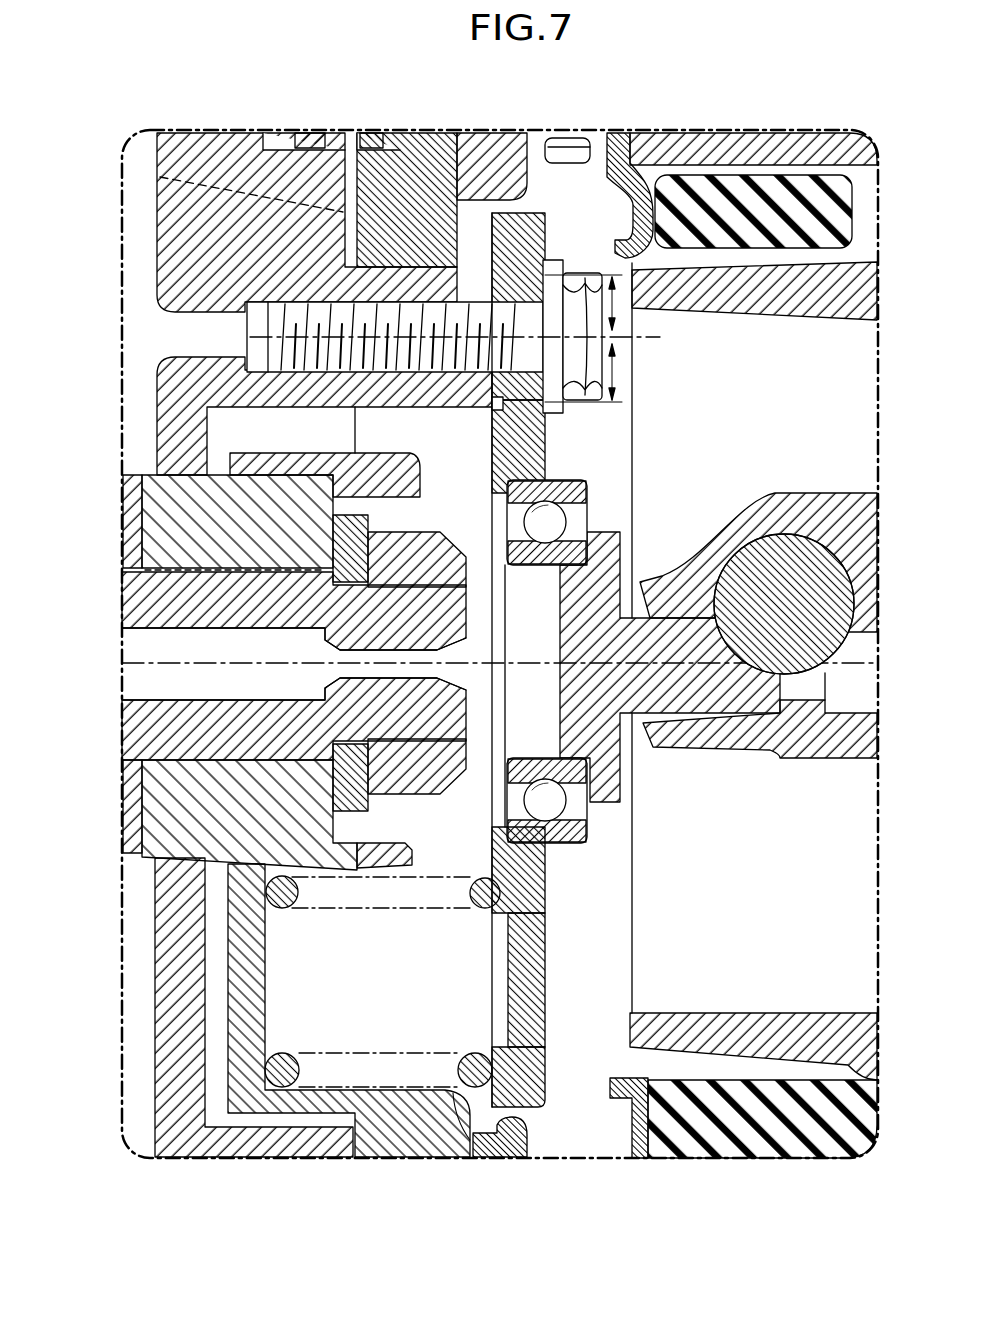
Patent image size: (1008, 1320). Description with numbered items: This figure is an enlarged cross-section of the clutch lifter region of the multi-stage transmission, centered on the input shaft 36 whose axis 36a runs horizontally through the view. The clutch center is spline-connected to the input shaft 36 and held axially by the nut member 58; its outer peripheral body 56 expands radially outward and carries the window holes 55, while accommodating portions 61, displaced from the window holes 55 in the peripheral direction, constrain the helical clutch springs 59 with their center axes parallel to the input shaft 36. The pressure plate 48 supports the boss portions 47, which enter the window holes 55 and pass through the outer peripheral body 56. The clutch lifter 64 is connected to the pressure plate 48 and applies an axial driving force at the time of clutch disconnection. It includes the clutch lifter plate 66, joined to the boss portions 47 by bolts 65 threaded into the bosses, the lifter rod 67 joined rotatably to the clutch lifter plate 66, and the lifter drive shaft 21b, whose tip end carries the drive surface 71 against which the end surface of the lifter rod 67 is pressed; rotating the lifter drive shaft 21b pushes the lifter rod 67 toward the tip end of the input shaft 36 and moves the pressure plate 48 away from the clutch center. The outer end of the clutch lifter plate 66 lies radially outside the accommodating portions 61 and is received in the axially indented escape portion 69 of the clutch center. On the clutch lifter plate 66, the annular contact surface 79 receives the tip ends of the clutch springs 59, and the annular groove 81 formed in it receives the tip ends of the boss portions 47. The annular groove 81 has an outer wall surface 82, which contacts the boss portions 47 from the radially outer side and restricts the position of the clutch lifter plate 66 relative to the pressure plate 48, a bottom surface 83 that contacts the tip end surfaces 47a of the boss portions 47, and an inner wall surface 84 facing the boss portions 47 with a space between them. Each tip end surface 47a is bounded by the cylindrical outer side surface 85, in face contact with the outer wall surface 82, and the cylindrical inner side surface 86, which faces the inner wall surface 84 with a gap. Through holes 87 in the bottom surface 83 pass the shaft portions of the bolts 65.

The lifter drive shaft 21b is at (774, 590).
The input shaft 36 is at (148, 728).
The axis of the input shaft 36a is at (148, 662).
The boss portion 47 is at (466, 400).
The tip end surface 47a is at (548, 400).
The pressure plate 48 is at (152, 433).
The window hole 55 is at (408, 462).
The outer peripheral body 56 is at (370, 236).
The nut member 58 is at (413, 790).
The clutch spring 59 is at (278, 1066).
The accommodating portion 61 is at (335, 1087).
The clutch lifter 64 is at (606, 828).
The bolt 65 is at (490, 319).
The clutch lifter plate 66 is at (494, 660).
The lifter rod 67 is at (687, 697).
The escape portion 69 is at (505, 1118).
The drive surface 71 is at (763, 676).
The annular contact surface 79 is at (490, 1093).
The annular groove 81 is at (510, 945).
The outer wall surface 82 is at (495, 1040).
The bottom surface 83 is at (508, 988).
The inner wall surface 84 is at (497, 918).
The outer side surface 85 is at (500, 270).
The inner side surface 86 is at (520, 437).
The through hole 87 is at (551, 307).